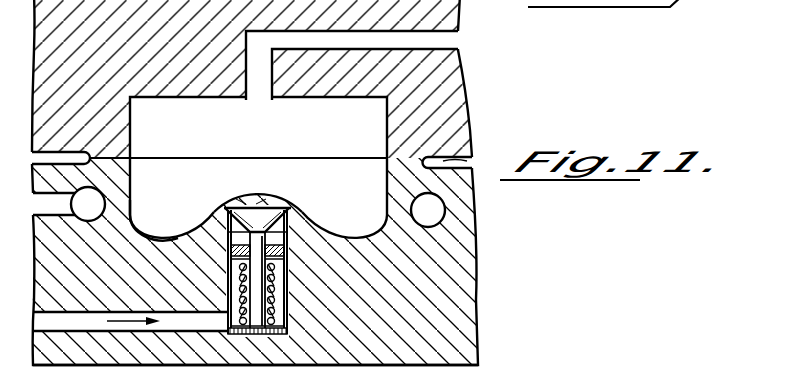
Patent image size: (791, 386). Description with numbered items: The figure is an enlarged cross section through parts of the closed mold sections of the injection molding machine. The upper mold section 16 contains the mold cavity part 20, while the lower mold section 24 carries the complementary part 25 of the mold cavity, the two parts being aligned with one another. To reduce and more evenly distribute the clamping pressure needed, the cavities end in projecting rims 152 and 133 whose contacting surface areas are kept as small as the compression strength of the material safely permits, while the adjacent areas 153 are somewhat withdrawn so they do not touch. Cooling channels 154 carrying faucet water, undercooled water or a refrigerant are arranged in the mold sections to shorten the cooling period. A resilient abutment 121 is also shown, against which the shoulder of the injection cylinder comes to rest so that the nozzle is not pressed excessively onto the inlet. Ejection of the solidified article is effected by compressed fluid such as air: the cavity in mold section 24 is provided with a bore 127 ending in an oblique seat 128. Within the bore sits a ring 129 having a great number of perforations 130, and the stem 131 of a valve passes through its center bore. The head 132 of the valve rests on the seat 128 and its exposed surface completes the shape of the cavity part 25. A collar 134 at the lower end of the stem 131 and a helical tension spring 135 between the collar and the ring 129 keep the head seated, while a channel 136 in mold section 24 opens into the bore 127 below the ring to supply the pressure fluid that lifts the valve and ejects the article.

The mold section 16 is at (466, 96).
The mold section 24 is at (462, 308).
The mold cavity part 20 is at (312, 143).
The complementary part of mold cavity 25 is at (128, 212).
The resilient abutment 121 is at (443, 38).
The bore 127 is at (282, 312).
The oblique seat 128 is at (265, 235).
The ring 129 is at (221, 212).
The perforations 130 is at (290, 235).
The stem 131 is at (277, 231).
The head 132 is at (258, 210).
The projecting rim 133 is at (103, 153).
The collar 134 is at (268, 330).
The helical tension spring 135 is at (226, 322).
The channel 136 is at (76, 325).
The projecting rim 152 is at (115, 163).
The adjacent area 153 is at (448, 160).
The cooling channel 154 is at (92, 198).